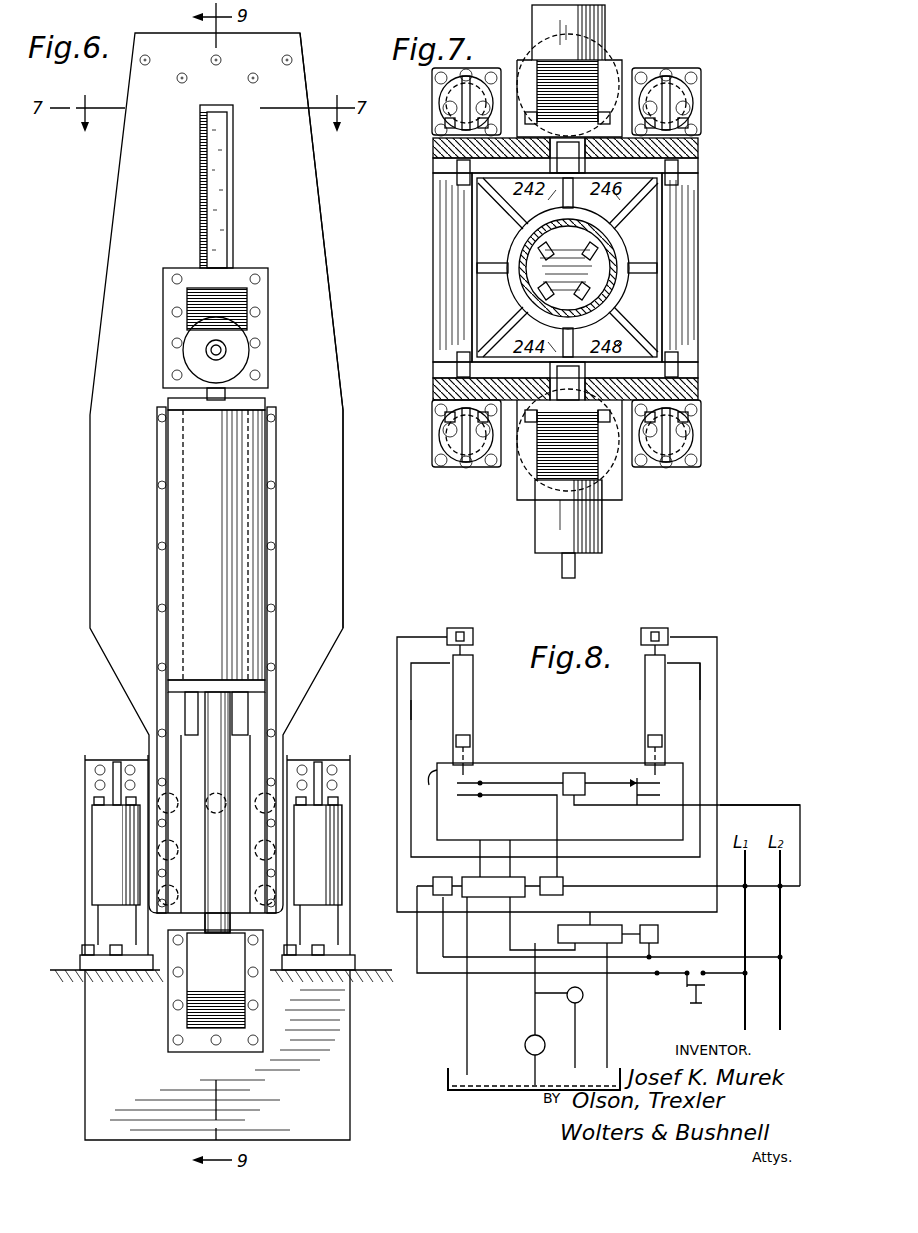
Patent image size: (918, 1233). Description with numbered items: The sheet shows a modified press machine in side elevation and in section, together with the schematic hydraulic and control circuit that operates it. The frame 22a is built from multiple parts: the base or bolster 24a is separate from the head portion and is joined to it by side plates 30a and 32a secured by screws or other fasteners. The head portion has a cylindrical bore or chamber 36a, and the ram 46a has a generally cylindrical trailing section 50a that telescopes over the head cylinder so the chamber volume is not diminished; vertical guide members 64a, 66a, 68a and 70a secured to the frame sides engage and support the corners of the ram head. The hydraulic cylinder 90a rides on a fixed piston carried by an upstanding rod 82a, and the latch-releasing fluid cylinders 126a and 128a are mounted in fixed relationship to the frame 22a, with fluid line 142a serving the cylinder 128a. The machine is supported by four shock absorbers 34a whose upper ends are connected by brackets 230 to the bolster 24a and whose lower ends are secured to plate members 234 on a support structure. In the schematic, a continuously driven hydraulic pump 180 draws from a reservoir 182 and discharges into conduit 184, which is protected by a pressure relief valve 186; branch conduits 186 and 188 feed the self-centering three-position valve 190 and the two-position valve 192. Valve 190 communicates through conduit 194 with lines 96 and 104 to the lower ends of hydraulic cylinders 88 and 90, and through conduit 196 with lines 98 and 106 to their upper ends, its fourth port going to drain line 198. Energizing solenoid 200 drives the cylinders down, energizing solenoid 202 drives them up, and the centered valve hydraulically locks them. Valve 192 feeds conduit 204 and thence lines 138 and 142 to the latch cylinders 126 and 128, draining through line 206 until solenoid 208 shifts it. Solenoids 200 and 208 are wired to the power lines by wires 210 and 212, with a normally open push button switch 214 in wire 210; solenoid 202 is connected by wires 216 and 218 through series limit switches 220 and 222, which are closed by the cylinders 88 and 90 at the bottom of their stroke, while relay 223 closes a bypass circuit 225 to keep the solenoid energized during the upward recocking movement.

In FIG. 6, the frame 22a is at (326, 212).
In FIG. 6, the side plate 32a is at (322, 599).
In FIG. 7, the side plate 32a is at (660, 415).
In FIG. 6, the fluid cylinder 128a is at (242, 358).
In FIG. 7, the fluid cylinder 128a is at (537, 532).
In FIG. 6, the fluid line 142a is at (224, 345).
In FIG. 7, the fluid line 142a is at (560, 567).
In FIG. 6, the hydraulic cylinder 90a is at (258, 510).
In FIG. 6, the upstanding rod 82a is at (217, 748).
In FIG. 6, the shock absorber 34a is at (105, 858).
In FIG. 6, the plate member 234 is at (105, 972).
In FIG. 6, the base or bolster 24a is at (335, 1088).
In FIG. 7, the side plate 30a is at (680, 145).
In FIG. 7, the ram 46a is at (675, 305).
In FIG. 7, the vertical guide member 64a is at (458, 180).
In FIG. 7, the vertical guide member 66a is at (678, 185).
In FIG. 7, the vertical guide member 70a is at (460, 362).
In FIG. 7, the vertical guide member 68a is at (678, 360).
In FIG. 7, the chamber or bore 36a is at (610, 260).
In FIG. 7, the trailing section of ram 50a is at (612, 292).
In FIG. 7, the bracket 230 is at (445, 445).
In FIG. 7, the fluid cylinder 126a is at (596, 28).
In FIG. 8, the conduit 138 is at (397, 703).
In FIG. 8, the fluid line 142 is at (705, 705).
In FIG. 8, the fluid conduit 104 is at (690, 768).
In FIG. 8, the hydraulic line 98 is at (413, 708).
In FIG. 8, the hydraulic line 96 is at (431, 761).
In FIG. 8, the fluid conduit 106 is at (705, 675).
In FIG. 8, the fluid operated cylinder 126 is at (475, 632).
In FIG. 8, the fluid operated cylinder 128 is at (670, 628).
In FIG. 8, the hydraulic cylinder 88 is at (473, 708).
In FIG. 8, the hydraulic cylinder 90 is at (645, 708).
In FIG. 8, the limit switch 220 is at (478, 780).
In FIG. 8, the relay 223 is at (574, 773).
In FIG. 8, the limit switch 222 is at (634, 778).
In FIG. 8, the circuit 225 is at (598, 805).
In FIG. 8, the wire 218 is at (768, 805).
In FIG. 8, the conduit 194 is at (512, 850).
In FIG. 8, the conduit 196 is at (470, 858).
In FIG. 8, the first electrical solenoid 200 is at (428, 877).
In FIG. 8, the three position valve 190 is at (493, 887).
In FIG. 8, the solenoid 202 is at (565, 882).
In FIG. 8, the wire 216 is at (635, 886).
In FIG. 8, the conduit 204 is at (620, 916).
In FIG. 8, the two position valve 192 is at (590, 935).
In FIG. 8, the solenoid 208 is at (658, 930).
In FIG. 8, the branch conduit 186 is at (508, 950).
In FIG. 8, the branch conduit 188 is at (558, 940).
In FIG. 8, the wire 212 is at (697, 970).
In FIG. 8, the wire 210 is at (667, 978).
In FIG. 8, the push button switch 214 is at (688, 1003).
In FIG. 8, the drain line 198 is at (465, 1030).
In FIG. 8, the conduit 184 is at (535, 975).
In FIG. 8, the hydraulic pump 180 is at (525, 1050).
In FIG. 8, the drain line 206 is at (609, 1045).
In FIG. 8, the reservoir 182 is at (460, 1068).